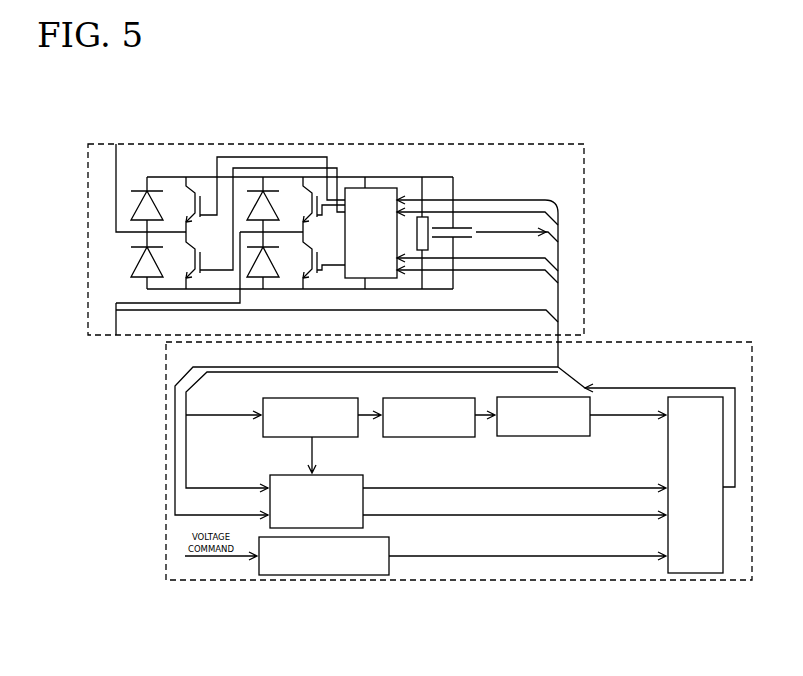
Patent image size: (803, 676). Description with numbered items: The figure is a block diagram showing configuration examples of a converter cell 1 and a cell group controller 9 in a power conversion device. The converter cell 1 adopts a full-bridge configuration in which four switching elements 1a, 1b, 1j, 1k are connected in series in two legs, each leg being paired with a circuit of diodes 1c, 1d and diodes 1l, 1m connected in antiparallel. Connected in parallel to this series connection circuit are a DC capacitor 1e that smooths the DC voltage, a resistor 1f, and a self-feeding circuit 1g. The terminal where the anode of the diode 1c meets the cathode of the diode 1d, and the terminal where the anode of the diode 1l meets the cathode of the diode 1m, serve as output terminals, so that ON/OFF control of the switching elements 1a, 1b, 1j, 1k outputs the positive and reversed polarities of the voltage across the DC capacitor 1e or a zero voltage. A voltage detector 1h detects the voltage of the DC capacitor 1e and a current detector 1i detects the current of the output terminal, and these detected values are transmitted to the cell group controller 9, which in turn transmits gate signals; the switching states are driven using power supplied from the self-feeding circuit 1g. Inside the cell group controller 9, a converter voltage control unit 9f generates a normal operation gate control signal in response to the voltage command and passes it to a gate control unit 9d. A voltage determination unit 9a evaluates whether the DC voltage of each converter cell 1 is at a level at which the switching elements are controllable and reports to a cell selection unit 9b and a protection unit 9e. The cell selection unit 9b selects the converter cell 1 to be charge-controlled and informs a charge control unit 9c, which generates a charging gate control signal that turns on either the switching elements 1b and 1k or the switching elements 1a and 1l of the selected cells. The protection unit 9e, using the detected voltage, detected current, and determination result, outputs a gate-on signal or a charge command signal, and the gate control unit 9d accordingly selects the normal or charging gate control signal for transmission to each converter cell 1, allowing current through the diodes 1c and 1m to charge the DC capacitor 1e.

The converter cell 1 is at (167, 143).
The switching element 1a is at (186, 183).
The switching element 1b is at (203, 257).
The diode 1c is at (137, 210).
The diode 1d is at (135, 268).
The DC capacitor 1e is at (474, 229).
The resistor 1f is at (428, 218).
The self-feeding circuit 1g is at (380, 188).
The voltage detector 1h is at (481, 233).
The current detector 1i is at (116, 318).
The switching element 1j is at (312, 195).
The switching element 1k is at (310, 272).
The diode 1l is at (277, 210).
The diode 1m is at (267, 277).
The cell group controller 9 is at (688, 342).
The voltage determination unit 9a is at (363, 437).
The cell selection unit 9b is at (477, 435).
The charge control unit 9c is at (563, 398).
The gate control unit 9d is at (690, 573).
The protection unit 9e is at (285, 475).
The converter voltage control unit 9f is at (330, 575).